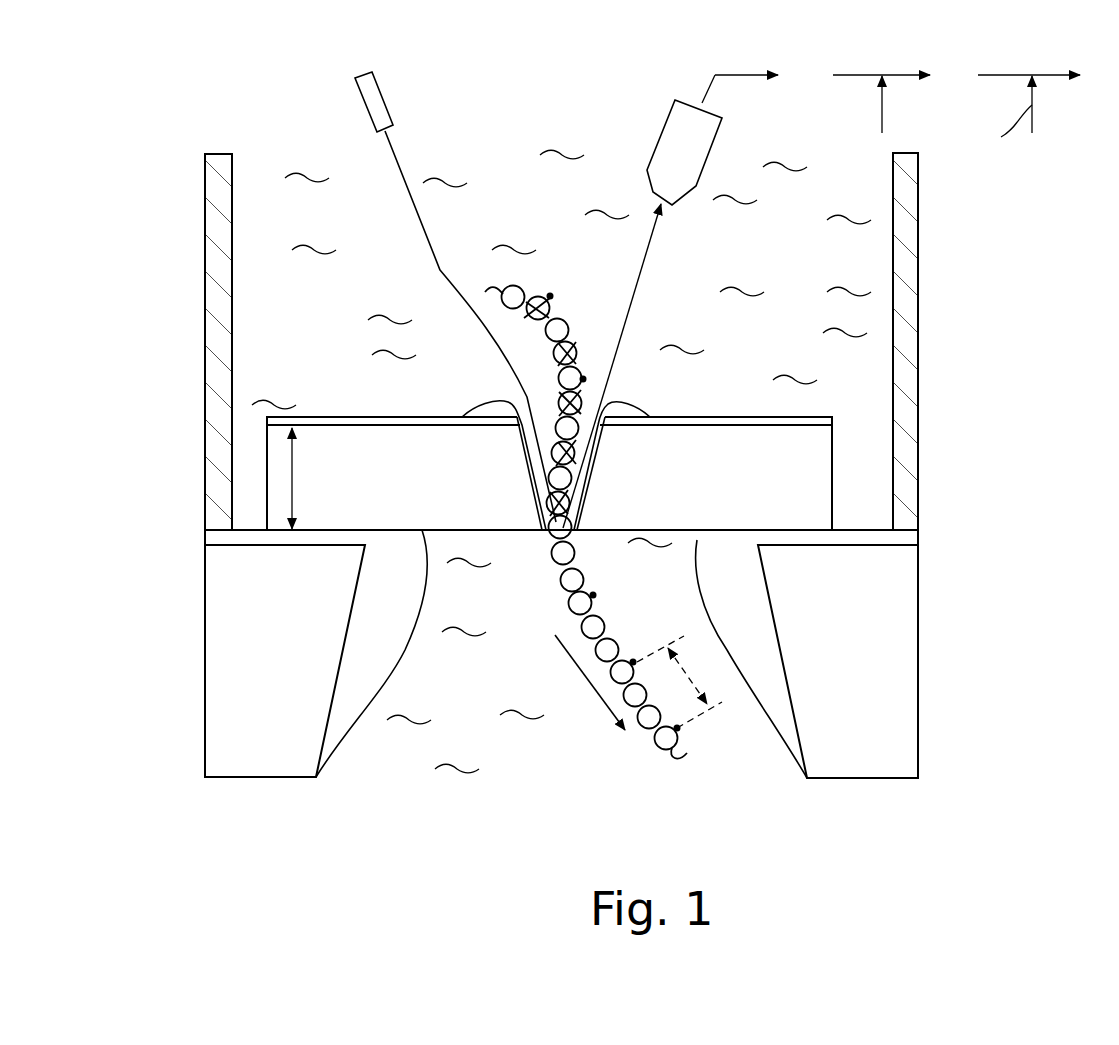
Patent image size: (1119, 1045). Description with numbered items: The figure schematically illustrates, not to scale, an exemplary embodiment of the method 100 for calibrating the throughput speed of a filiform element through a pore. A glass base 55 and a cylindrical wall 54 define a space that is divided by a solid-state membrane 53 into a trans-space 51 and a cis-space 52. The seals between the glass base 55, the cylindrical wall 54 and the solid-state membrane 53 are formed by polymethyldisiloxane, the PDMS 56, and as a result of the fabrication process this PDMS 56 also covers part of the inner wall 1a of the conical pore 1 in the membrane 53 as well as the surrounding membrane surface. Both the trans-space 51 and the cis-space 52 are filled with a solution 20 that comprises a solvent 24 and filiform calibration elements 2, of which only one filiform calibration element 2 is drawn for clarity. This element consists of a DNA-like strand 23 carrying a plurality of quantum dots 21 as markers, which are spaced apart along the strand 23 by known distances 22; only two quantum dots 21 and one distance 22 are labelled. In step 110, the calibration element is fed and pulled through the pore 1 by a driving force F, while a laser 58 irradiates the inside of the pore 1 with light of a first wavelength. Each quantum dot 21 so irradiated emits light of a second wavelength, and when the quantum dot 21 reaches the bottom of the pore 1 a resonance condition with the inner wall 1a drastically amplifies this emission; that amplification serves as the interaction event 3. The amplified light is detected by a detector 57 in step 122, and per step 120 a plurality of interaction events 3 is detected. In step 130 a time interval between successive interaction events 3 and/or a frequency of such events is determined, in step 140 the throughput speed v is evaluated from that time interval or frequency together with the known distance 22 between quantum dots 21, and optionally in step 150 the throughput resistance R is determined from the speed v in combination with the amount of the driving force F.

The conical pore 1 is at (554, 540).
The inner wall 1a is at (530, 432).
The filiform calibration element 2 is at (639, 584).
The interaction event 3 is at (585, 545).
The solution 20 is at (639, 584).
The quantum dot 21 is at (637, 662).
The known distance 22 is at (882, 105).
The DNA-like strand 23 is at (673, 760).
The solvent 24 is at (310, 175).
The trans-space 51 is at (321, 294).
The cis-space 52 is at (468, 684).
The solid-state membrane 53 is at (347, 417).
The cylindrical wall 54 is at (216, 428).
The glass base 55 is at (228, 657).
The polymethyldisiloxane (PDMS) 56 is at (490, 404).
The detector 57 is at (665, 112).
The laser 58 is at (387, 100).
The method 100 is at (1018, 562).
The step of feeding and pulling 110 is at (580, 668).
The step of detecting a plurality of interaction events 120 is at (757, 262).
The step of detecting amplified light 122 is at (640, 282).
The step of determining time interval and/or frequency 130 is at (715, 75).
The step of evaluating throughput speed 140 is at (892, 73).
The step of determining throughput resistance 150 is at (1052, 73).